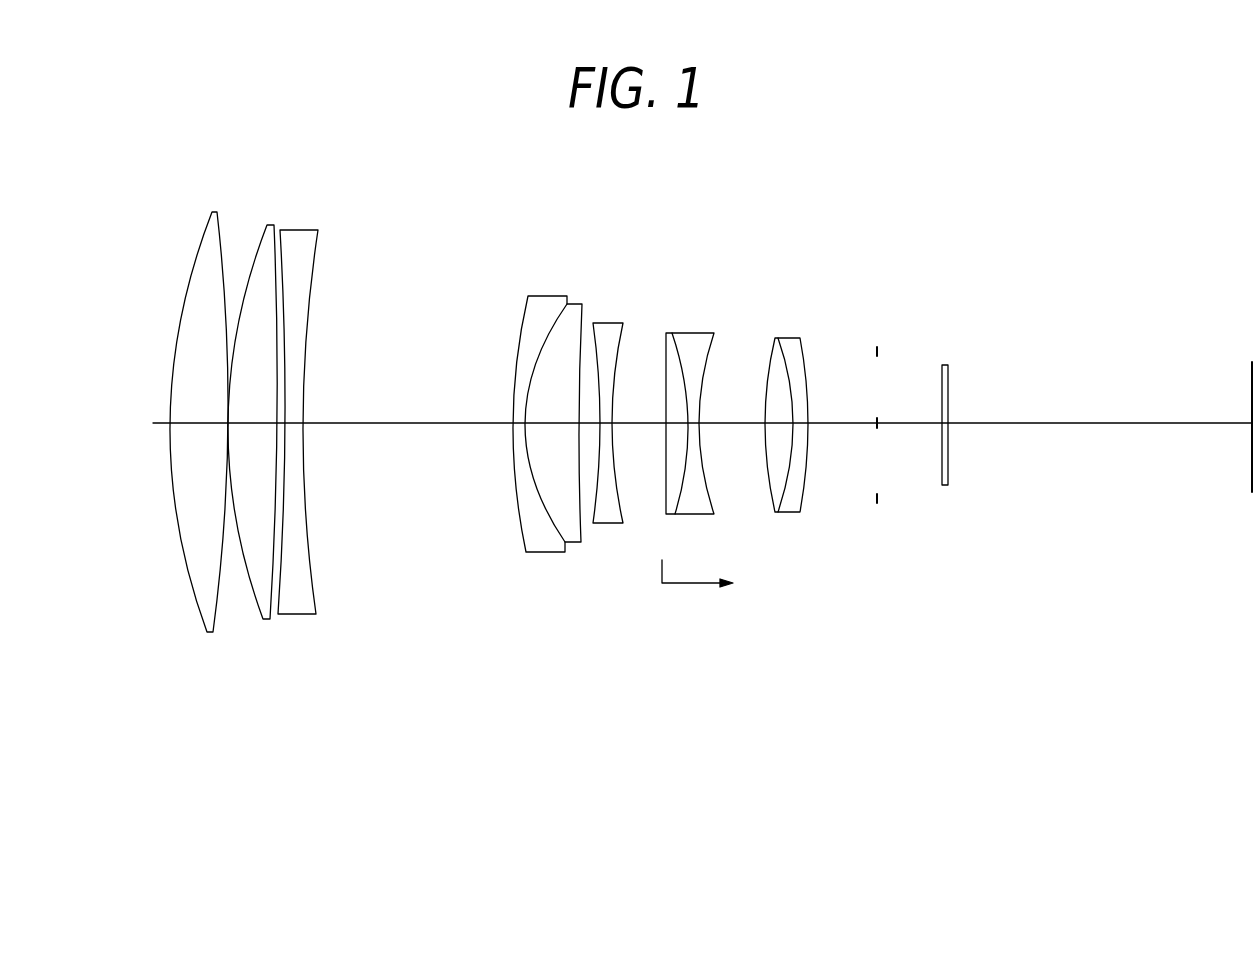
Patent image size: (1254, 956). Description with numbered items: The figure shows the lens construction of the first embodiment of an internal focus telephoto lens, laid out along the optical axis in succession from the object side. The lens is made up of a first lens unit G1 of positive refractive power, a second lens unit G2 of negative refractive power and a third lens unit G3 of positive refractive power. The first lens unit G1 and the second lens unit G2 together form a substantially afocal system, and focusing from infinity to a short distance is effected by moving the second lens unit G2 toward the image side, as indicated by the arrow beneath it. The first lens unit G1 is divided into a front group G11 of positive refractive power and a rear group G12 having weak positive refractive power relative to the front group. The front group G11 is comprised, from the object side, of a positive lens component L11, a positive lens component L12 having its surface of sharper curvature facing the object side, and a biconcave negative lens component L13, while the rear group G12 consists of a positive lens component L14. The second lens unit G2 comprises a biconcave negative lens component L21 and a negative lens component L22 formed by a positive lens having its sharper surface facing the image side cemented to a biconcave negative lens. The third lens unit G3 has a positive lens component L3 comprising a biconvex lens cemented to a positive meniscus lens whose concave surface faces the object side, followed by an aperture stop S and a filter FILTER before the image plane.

The positive lens component L11 is at (216, 212).
The positive lens component L12 is at (270, 225).
The negative lens component L13 is at (300, 230).
The positive lens component L14 is at (513, 262).
The front group G11 is at (323, 634).
The rear group G12 is at (585, 637).
The first lens unit G1 is at (575, 699).
The negative lens component L21 is at (608, 323).
The negative lens component L22 is at (713, 310).
The second lens unit G2 is at (737, 556).
The positive lens component L3 is at (808, 312).
The third lens unit G3 is at (810, 556).
The aperture stop S is at (878, 348).
The filter FILTER is at (947, 485).